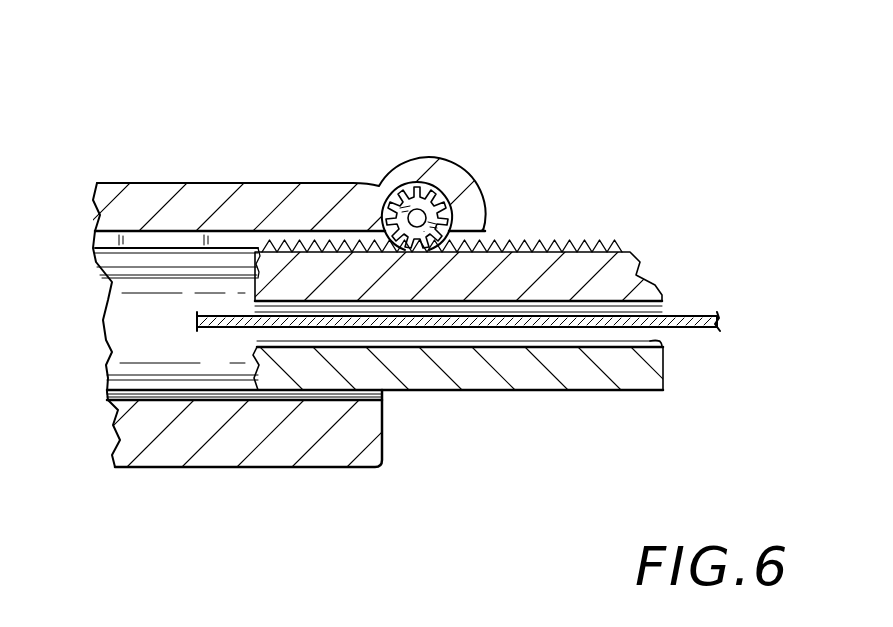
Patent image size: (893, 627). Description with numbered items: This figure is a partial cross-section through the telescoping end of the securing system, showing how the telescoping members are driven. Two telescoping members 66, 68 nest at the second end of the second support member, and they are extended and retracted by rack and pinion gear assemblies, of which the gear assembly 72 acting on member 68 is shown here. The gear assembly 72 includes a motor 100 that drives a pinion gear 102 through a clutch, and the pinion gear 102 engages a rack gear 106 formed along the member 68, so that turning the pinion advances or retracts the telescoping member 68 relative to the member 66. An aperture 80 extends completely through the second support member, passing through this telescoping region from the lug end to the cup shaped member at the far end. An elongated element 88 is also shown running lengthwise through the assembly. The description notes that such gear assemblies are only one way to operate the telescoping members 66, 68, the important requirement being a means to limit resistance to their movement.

The telescoping member 66 is at (222, 467).
The telescoping member 68 is at (508, 392).
The rack and pinion gear assembly 72 is at (425, 154).
The aperture 80 is at (660, 342).
The adjusting rod 88 is at (697, 315).
The motor 100 is at (403, 183).
The pinion gear 102 is at (447, 212).
The rack gear 106 is at (568, 240).